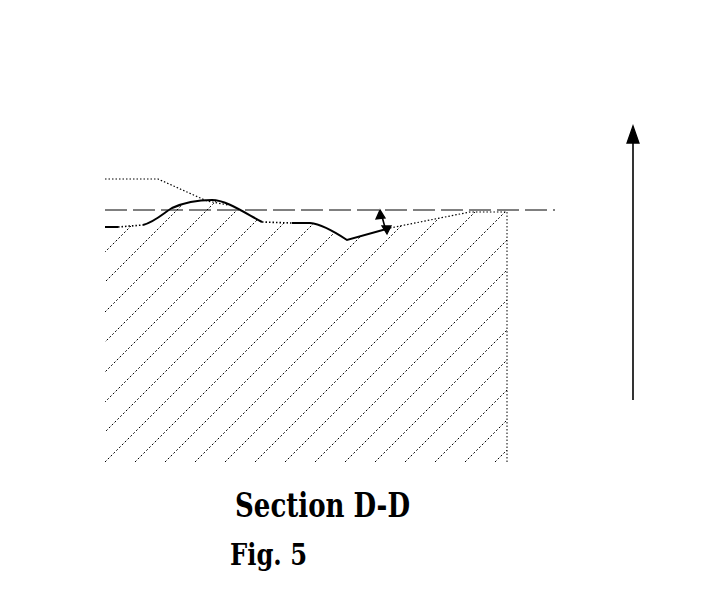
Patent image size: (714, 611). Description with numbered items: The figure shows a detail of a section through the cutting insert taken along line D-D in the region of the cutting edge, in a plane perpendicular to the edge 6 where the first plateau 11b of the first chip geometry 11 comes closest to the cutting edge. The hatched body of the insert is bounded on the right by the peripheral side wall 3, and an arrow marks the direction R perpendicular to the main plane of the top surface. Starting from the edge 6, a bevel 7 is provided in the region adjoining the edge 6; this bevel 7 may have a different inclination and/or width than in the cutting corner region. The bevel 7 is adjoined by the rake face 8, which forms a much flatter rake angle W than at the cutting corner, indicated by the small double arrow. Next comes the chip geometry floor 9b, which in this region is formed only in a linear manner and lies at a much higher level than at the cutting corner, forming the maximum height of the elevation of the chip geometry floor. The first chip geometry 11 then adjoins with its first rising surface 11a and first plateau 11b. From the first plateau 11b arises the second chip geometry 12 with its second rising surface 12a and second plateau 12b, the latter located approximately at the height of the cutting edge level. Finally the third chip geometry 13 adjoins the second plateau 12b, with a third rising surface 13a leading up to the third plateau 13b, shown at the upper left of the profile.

The side wall 3 is at (507, 405).
The edge 6 is at (507, 212).
The bevel 7 is at (483, 211).
The rake face 8 is at (370, 238).
The chip geometry floor 9b is at (361, 238).
The first chip geometry 11 is at (422, 25).
The first rising surface 11a is at (348, 240).
The first plateau 11b is at (292, 223).
The second chip geometry 12 is at (100, 33).
The second rising surface 12a is at (262, 222).
The second plateau 12b is at (225, 203).
The third chip geometry 13 is at (70, 108).
The third rising surface 13a is at (175, 186).
The third plateau 13b is at (137, 179).
The rake angle W is at (388, 219).
The direction perpendicular to the main plane R is at (647, 263).